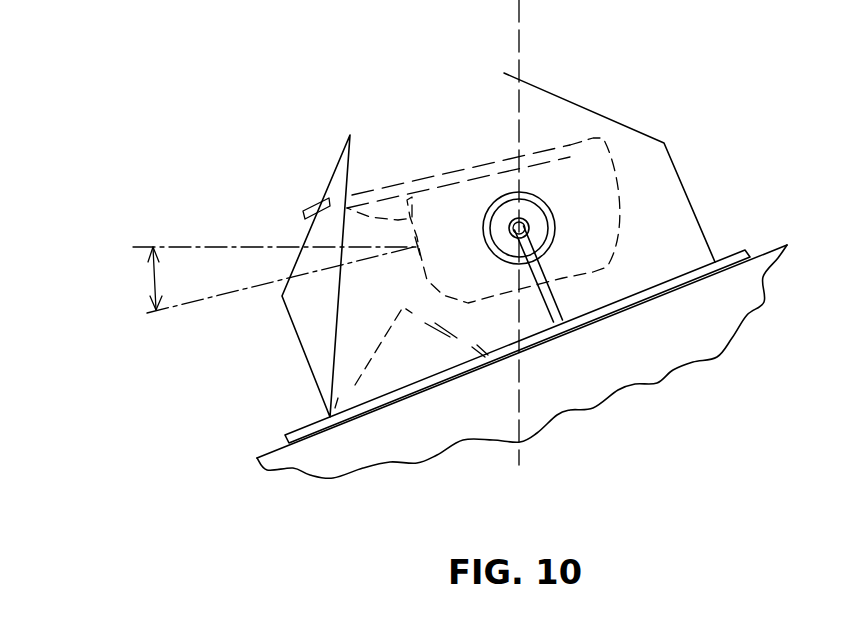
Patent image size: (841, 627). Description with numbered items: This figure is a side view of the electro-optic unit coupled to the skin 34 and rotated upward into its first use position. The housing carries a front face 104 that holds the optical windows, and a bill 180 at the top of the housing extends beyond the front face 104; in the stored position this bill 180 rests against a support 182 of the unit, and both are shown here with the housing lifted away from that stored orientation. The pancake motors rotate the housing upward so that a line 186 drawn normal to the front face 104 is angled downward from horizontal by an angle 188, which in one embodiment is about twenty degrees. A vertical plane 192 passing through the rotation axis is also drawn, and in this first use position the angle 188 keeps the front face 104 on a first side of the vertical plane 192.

The skin 34 is at (767, 245).
The front face 104 is at (333, 192).
The bill 180 is at (378, 192).
The support 182 is at (358, 357).
The line 186 is at (185, 302).
The angle 188 is at (153, 281).
The vertical plane 192 is at (519, 36).